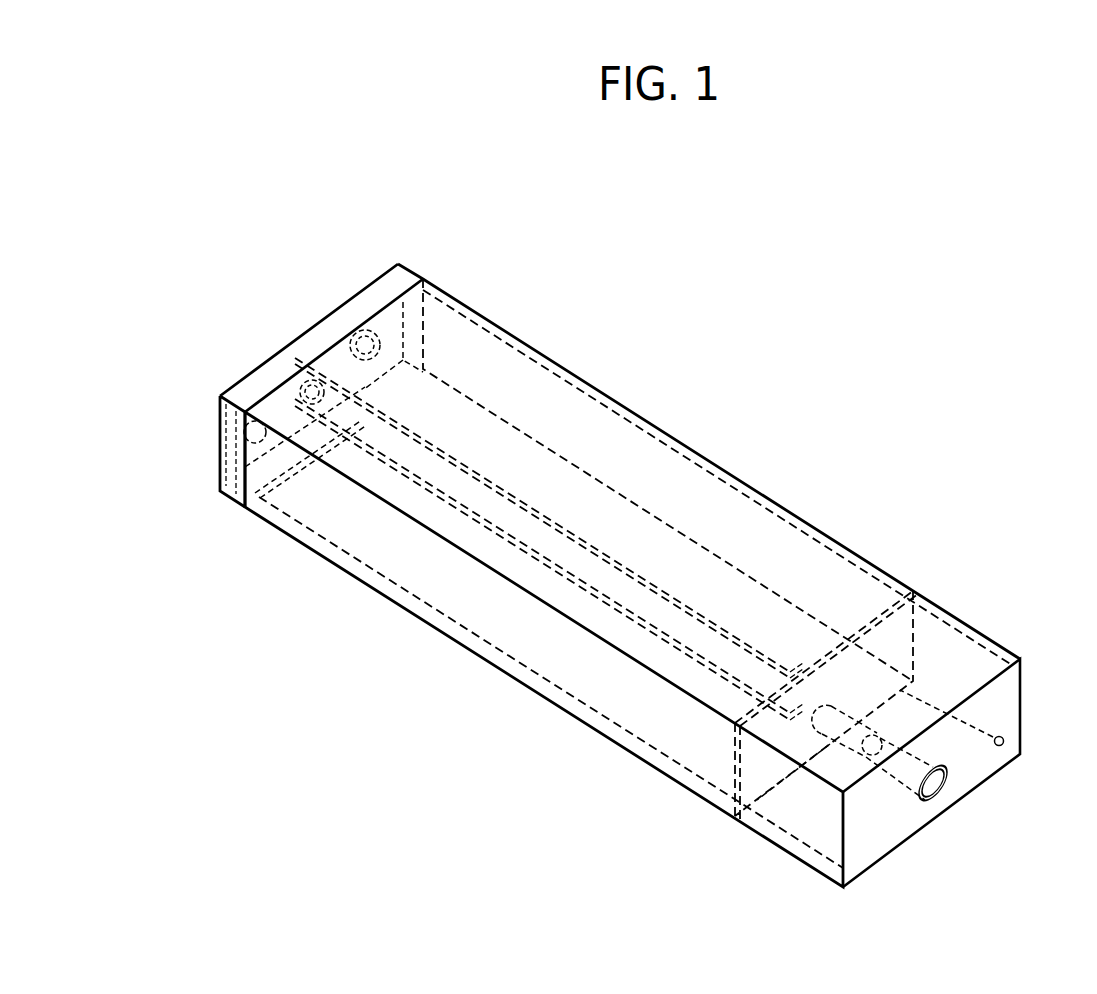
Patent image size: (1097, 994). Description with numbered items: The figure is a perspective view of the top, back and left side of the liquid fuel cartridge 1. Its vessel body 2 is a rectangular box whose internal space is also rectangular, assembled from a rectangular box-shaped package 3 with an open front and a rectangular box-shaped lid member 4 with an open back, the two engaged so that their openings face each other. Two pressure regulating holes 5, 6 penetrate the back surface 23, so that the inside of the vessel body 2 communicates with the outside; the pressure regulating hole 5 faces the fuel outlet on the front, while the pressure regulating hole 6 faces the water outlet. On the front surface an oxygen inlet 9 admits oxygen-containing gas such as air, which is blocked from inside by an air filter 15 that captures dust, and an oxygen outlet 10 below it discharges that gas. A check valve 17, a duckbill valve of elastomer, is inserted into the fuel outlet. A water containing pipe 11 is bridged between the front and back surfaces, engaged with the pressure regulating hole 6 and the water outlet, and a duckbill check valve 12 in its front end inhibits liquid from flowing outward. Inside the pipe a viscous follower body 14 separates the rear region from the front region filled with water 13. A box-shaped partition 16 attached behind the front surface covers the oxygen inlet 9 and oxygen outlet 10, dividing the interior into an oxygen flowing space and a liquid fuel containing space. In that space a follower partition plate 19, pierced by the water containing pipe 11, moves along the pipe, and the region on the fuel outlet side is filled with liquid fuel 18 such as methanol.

The liquid fuel cartridge 1 is at (937, 330).
The vessel body 2 is at (538, 256).
The package 3 is at (488, 319).
The lid member 4 is at (402, 268).
The pressure regulating hole 5 is at (1003, 740).
The pressure regulating hole 6 is at (943, 792).
The oxygen inlet 9 is at (255, 403).
The oxygen outlet 10 is at (265, 470).
The water containing pipe 11 is at (702, 615).
The check valve 12 is at (312, 380).
The water 13 is at (640, 592).
The follower body 14 is at (912, 693).
The air filter 15 is at (233, 386).
The partition 16 is at (290, 465).
The check valve 17 is at (368, 330).
The liquid fuel 18 is at (603, 507).
The follower partition plate 19 is at (910, 592).
The back surface 23 is at (977, 768).